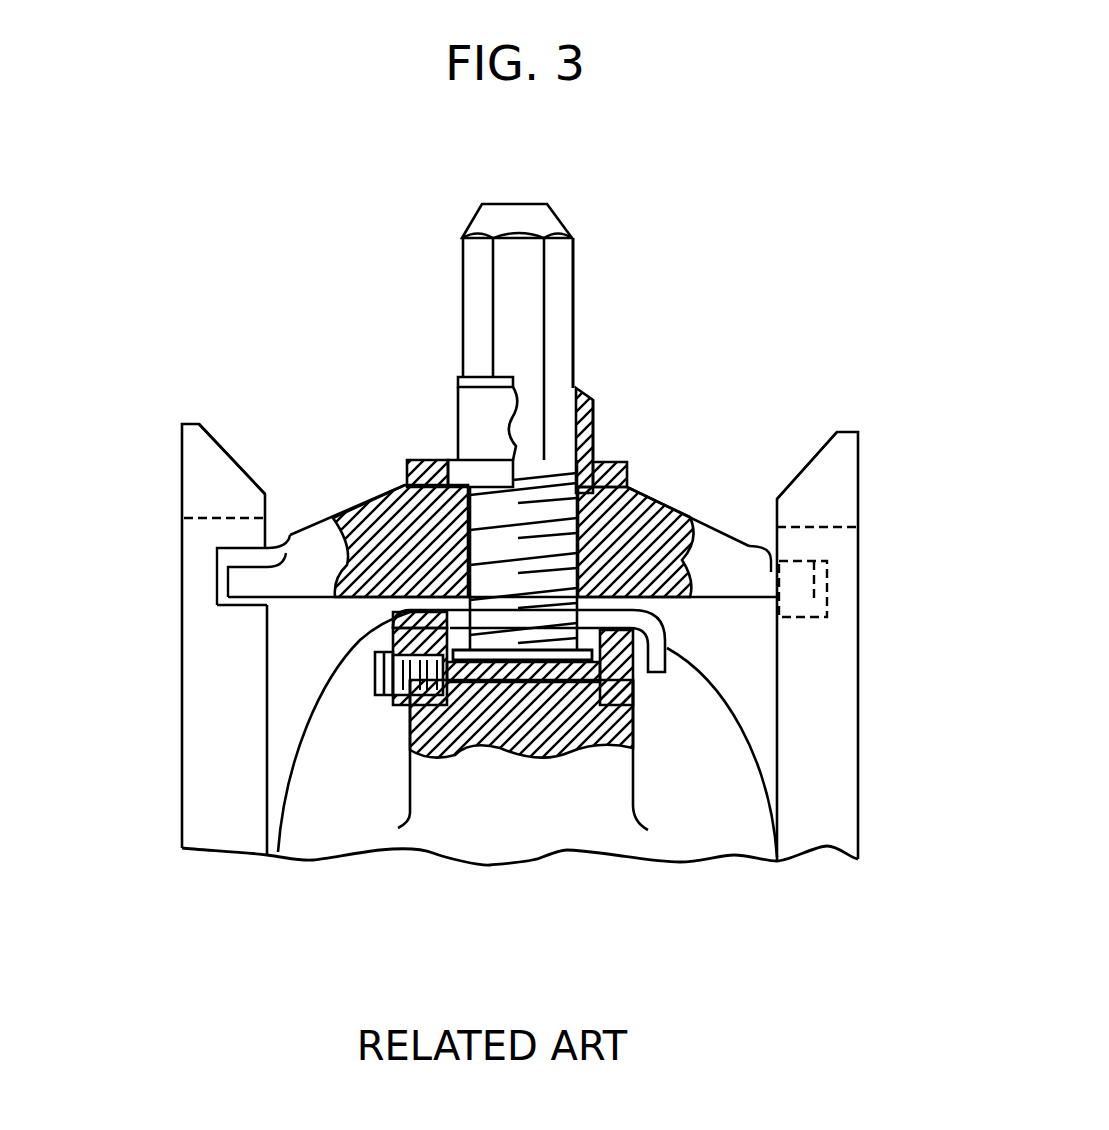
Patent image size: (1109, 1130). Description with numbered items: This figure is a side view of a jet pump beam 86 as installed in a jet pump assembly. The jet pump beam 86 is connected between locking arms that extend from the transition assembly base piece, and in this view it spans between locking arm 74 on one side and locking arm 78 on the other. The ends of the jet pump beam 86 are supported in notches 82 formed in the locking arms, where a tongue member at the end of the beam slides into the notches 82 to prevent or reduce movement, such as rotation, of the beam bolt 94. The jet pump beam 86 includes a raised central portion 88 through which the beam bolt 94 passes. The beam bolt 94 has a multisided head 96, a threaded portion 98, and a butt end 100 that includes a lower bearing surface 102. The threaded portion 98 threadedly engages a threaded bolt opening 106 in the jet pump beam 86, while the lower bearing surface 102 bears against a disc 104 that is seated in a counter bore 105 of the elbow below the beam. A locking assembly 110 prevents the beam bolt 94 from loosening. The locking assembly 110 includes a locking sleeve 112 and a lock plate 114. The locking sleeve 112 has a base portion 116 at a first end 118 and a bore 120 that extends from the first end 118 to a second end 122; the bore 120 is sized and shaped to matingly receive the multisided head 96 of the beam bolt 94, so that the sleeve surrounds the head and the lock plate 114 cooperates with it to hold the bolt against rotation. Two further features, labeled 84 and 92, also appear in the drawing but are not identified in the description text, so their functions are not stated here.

The locking arm 74 is at (181, 778).
The locking arm 78 is at (827, 792).
The notch 82 is at (179, 445).
The right wall upper end 84 is at (857, 449).
The jet pump beam 86 is at (374, 482).
The raised central portion 88 is at (676, 498).
The parting line 92 is at (228, 597).
The beam bolt 94 is at (472, 410).
The multisided head 96 is at (470, 283).
The threaded portion 98 is at (642, 487).
The butt end 100 is at (667, 647).
The lower bearing surface 102 is at (556, 700).
The disc 104 is at (525, 700).
The counter bore 105 is at (490, 682).
The threaded bolt opening 106 is at (473, 557).
The locking assembly 110 is at (597, 366).
The locking sleeve 112 is at (600, 452).
The lock plate 114 is at (620, 500).
The base portion 116 is at (455, 462).
The first end 118 is at (604, 453).
The bore 120 is at (576, 390).
The second end 122 is at (455, 369).